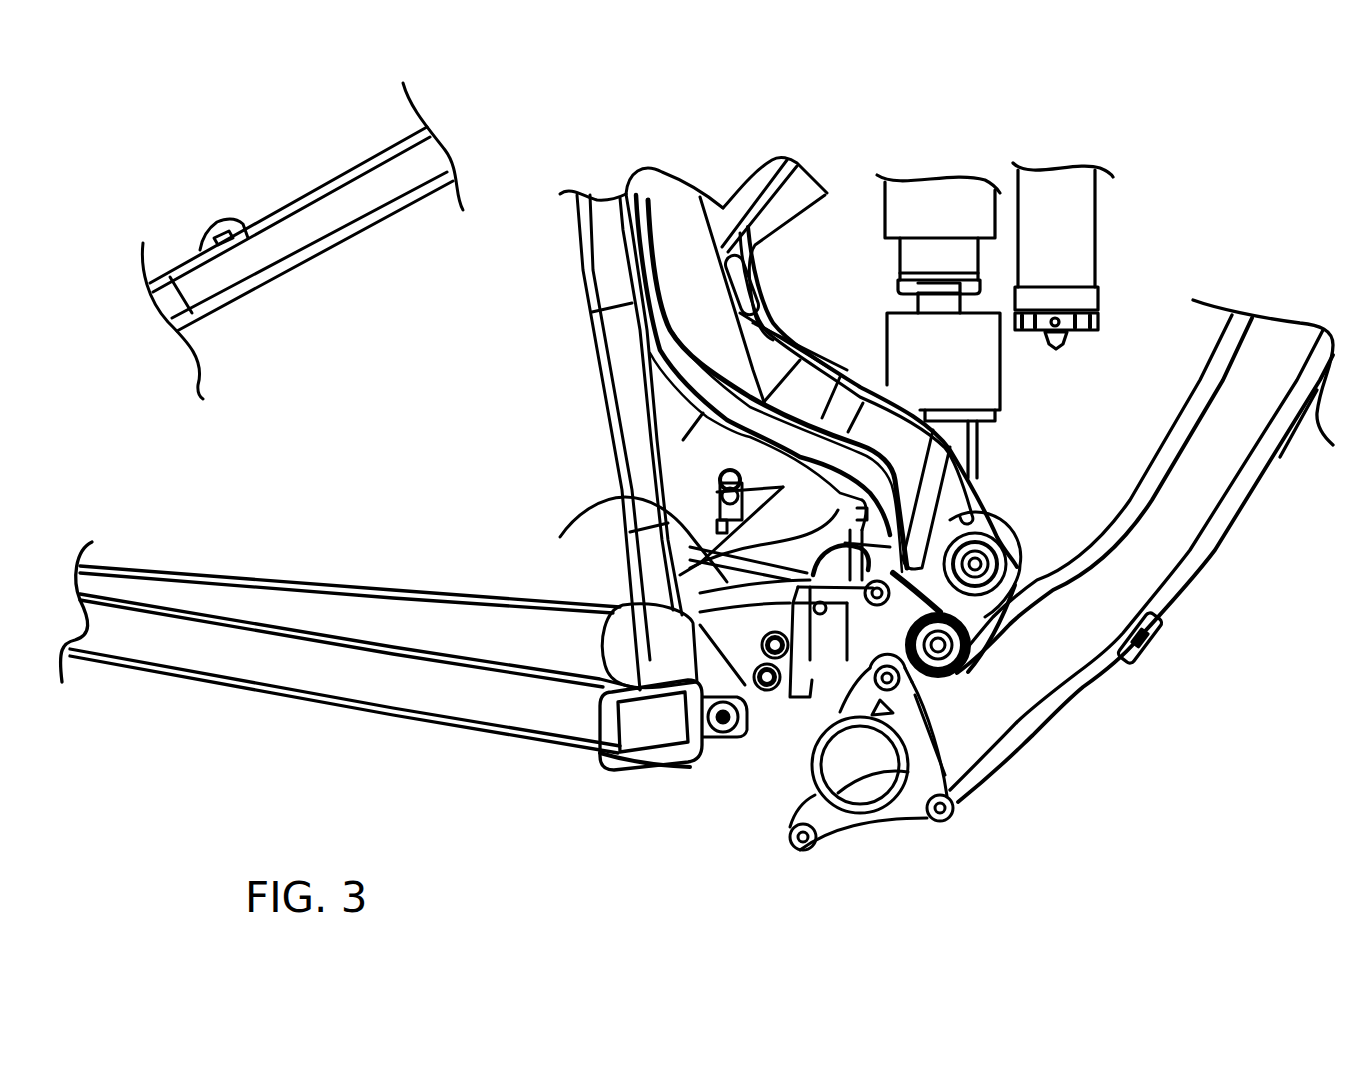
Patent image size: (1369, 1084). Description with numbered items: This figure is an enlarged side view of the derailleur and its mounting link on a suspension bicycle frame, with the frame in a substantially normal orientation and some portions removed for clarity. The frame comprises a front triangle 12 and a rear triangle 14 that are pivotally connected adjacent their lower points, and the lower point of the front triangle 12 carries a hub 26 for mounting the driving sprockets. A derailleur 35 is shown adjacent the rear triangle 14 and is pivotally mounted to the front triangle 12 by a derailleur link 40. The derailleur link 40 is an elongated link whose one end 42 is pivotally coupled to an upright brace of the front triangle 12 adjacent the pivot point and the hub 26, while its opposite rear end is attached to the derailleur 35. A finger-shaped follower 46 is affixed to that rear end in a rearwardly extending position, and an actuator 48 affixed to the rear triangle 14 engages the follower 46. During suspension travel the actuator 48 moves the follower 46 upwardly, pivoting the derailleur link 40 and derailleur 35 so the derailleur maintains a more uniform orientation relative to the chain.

The front triangle 12 is at (1167, 583).
The rear triangle 14 is at (338, 662).
The hub 26 is at (945, 818).
The derailleur 35 is at (605, 500).
The derailleur link 40 is at (807, 690).
The end of derailleur link 42 is at (997, 600).
The follower 46 is at (770, 690).
The actuator 48 is at (790, 668).